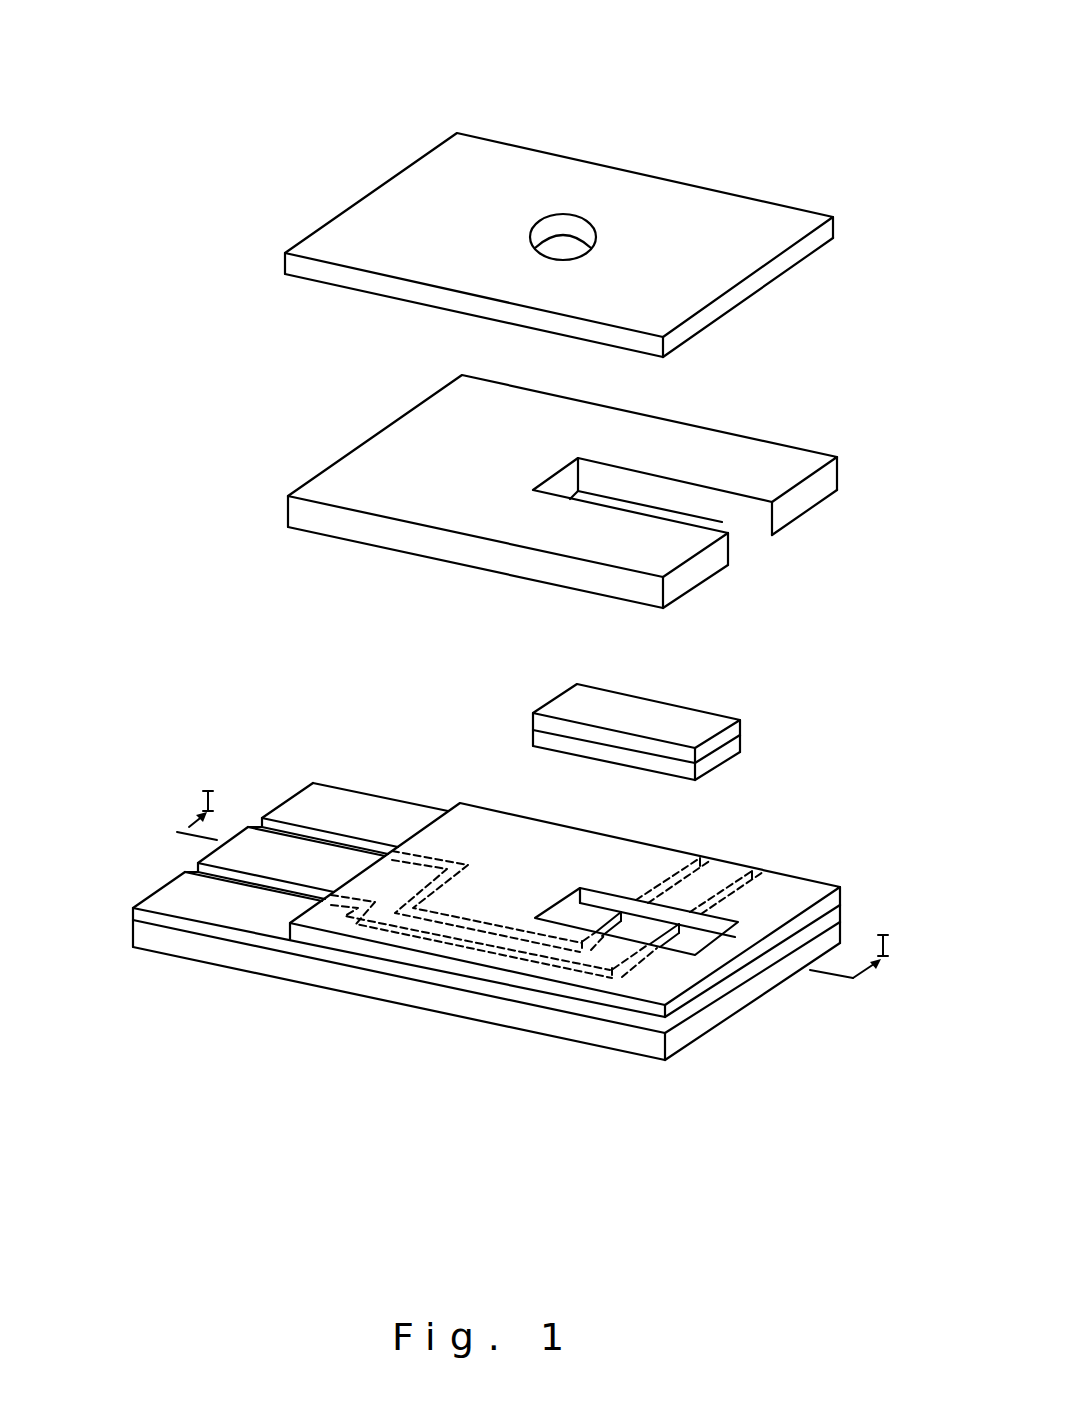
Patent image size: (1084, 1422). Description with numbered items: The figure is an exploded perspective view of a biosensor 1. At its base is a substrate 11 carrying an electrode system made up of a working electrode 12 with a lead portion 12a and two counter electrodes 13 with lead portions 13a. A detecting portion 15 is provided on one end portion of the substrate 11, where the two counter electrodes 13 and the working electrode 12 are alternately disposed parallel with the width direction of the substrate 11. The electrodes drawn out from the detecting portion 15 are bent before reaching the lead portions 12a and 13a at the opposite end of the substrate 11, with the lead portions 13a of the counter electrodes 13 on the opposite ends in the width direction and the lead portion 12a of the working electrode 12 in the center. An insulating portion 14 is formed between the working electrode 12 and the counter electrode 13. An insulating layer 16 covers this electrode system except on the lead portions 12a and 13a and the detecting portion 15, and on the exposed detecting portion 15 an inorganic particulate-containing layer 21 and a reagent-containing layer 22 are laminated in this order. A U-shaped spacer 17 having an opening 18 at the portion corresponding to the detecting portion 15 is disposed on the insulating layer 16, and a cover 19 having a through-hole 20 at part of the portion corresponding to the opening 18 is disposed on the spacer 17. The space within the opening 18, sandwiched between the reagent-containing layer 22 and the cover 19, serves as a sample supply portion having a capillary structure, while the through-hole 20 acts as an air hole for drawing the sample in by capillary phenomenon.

The biosensor 1 is at (811, 88).
The substrate 11 is at (277, 973).
The working electrode 12 is at (614, 969).
The lead portion 12a is at (248, 832).
The counter electrodes 13 is at (582, 943).
The lead portions 13a is at (153, 908).
The insulating portion 14 is at (198, 864).
The detecting portion 15 is at (567, 1114).
The insulating layer 16 is at (386, 957).
The spacer 17 is at (817, 500).
The opening 18 is at (748, 545).
The cover 19 is at (747, 290).
The through-hole 20 is at (563, 240).
The particulate-containing layer 21 is at (733, 747).
The reagent-containing layer 22 is at (733, 730).